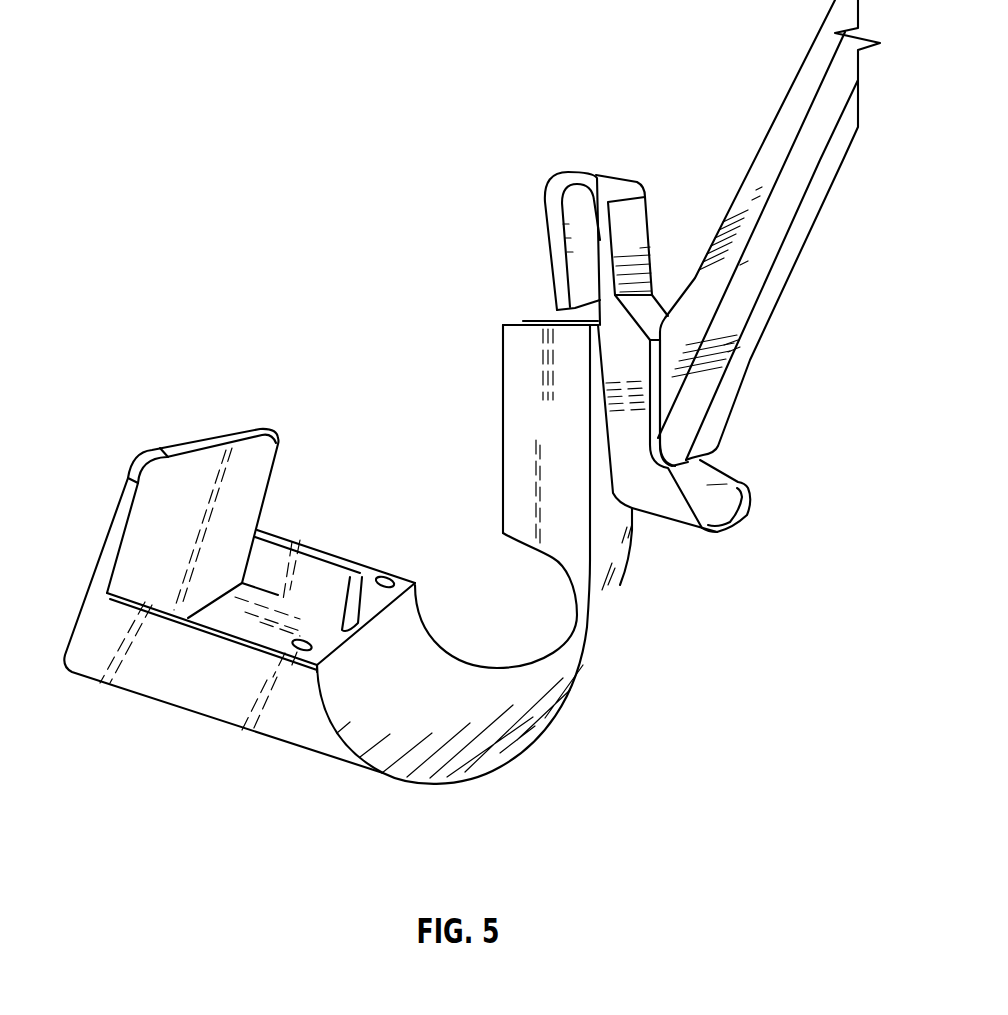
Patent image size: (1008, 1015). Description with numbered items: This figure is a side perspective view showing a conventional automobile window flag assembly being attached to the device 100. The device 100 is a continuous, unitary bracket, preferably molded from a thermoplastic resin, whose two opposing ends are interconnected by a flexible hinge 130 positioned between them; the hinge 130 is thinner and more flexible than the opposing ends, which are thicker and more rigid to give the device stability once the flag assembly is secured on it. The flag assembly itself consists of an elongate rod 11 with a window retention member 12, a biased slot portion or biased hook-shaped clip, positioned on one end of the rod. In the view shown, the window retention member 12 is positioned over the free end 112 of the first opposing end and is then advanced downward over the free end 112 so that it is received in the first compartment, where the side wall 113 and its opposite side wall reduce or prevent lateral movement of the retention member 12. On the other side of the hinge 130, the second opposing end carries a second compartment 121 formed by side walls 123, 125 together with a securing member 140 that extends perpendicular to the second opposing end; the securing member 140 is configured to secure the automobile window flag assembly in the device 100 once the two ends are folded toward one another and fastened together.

The device 100 is at (157, 350).
The elongate rod 11 is at (862, 246).
The window retention member 12 is at (572, 178).
The free end 112 is at (608, 338).
The side wall 113 is at (557, 457).
The second compartment 121 is at (350, 576).
The side wall 123 is at (160, 687).
The side wall 125 is at (296, 562).
The flexible hinge 130 is at (480, 769).
The securing member 140 is at (112, 553).